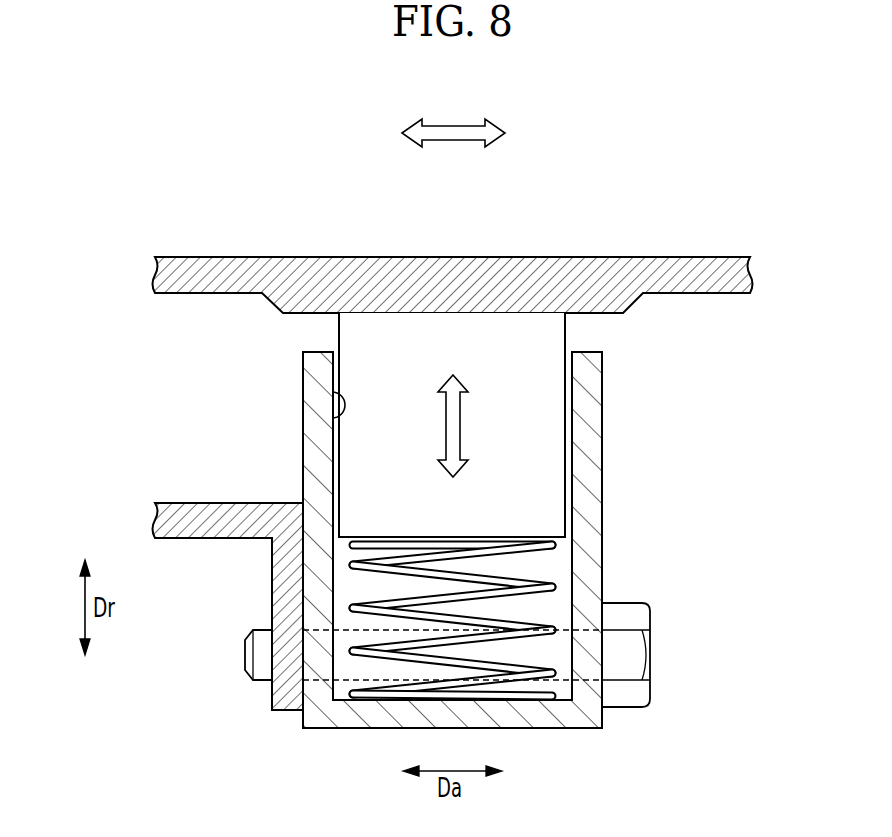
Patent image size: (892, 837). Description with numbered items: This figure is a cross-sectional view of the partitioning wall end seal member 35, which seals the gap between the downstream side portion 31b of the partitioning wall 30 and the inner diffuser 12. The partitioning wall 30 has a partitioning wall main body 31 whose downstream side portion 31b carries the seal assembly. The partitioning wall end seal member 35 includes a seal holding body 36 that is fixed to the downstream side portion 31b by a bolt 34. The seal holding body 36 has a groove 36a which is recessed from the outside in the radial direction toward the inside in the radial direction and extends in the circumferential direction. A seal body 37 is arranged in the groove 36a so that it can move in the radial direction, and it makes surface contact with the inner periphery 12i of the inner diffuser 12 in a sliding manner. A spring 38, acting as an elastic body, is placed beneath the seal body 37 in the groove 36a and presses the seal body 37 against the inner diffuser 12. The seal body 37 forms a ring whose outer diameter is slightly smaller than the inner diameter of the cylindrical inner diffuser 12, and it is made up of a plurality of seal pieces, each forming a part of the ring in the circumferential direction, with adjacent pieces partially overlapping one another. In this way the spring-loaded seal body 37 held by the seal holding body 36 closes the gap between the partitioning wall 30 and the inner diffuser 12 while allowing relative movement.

The inner diffuser 12 is at (217, 270).
The inner periphery of the inner diffuser 12i is at (362, 322).
The partitioning wall 30 is at (228, 567).
The partitioning wall main body 31 is at (205, 518).
The downstream side portion 31b is at (290, 580).
The bolt 34 is at (627, 652).
The partitioning wall end seal member 35 is at (472, 520).
The seal holding body 36 is at (588, 430).
The groove 36a is at (333, 392).
The seal body 37 is at (530, 482).
The spring 38 is at (507, 582).